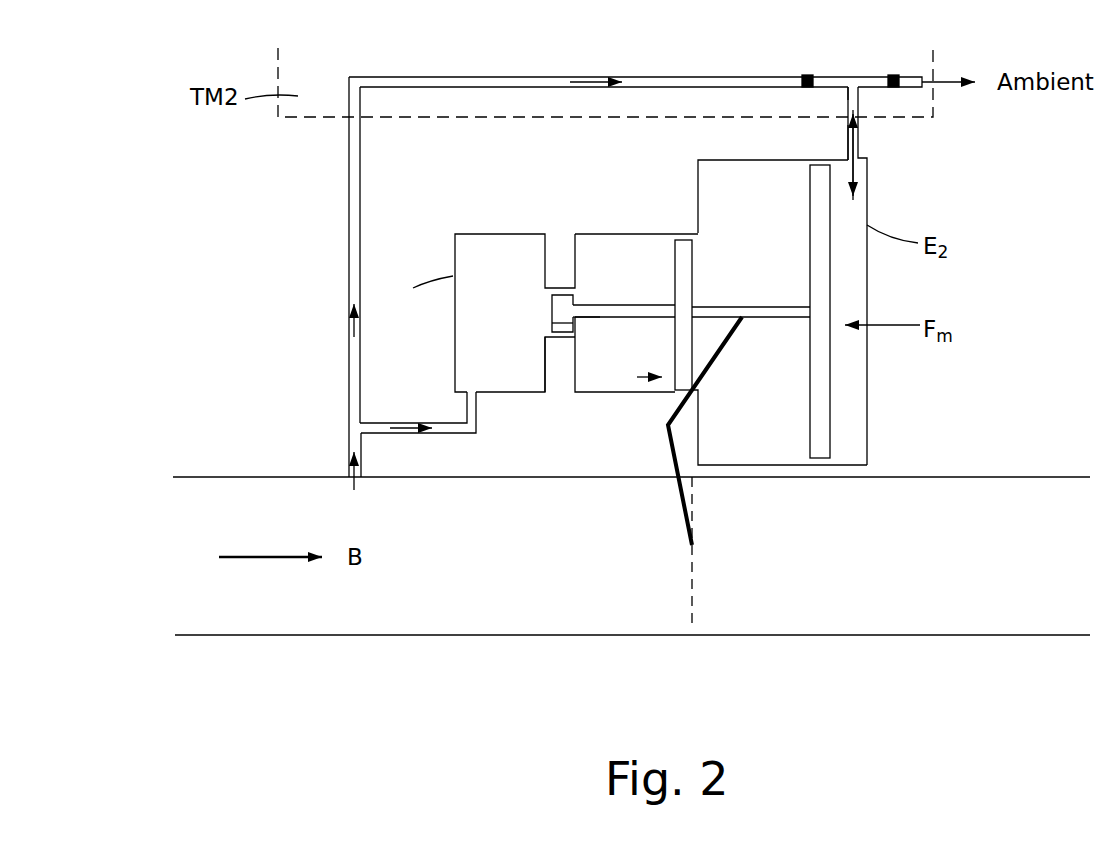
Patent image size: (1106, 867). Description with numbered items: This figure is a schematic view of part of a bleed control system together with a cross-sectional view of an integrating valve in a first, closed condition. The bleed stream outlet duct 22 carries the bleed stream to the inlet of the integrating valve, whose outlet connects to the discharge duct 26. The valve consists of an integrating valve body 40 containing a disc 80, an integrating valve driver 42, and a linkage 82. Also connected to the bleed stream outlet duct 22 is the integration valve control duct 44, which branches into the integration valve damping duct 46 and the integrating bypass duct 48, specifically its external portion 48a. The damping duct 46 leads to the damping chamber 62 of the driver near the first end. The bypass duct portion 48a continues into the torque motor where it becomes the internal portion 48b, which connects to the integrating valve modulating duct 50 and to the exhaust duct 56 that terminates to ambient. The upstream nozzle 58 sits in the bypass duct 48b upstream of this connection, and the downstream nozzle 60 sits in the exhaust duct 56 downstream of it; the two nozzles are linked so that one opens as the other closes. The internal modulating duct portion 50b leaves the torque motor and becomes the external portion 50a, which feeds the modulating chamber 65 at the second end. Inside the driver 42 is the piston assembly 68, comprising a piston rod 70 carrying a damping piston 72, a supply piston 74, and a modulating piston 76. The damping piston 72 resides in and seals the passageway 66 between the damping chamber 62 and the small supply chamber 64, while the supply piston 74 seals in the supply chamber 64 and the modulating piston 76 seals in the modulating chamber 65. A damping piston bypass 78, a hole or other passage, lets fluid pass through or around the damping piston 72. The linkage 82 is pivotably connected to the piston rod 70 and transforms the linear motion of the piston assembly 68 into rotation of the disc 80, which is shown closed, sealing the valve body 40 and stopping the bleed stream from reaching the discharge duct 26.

The bleed stream outlet duct 22 is at (243, 512).
The discharge duct 26 is at (988, 490).
The integrating valve body 40 is at (674, 564).
The integrating valve driver 42 is at (627, 335).
The integration valve control duct 44 is at (346, 455).
The integration valve damping duct 46 is at (467, 430).
The integration valve damping duct (integrating bypass duct) 48 is at (552, 247).
The external portion of integration damping duct 48a is at (347, 245).
The internal portion of integration valve damping duct 48b is at (487, 80).
The integrating valve modulating duct 50 is at (871, 127).
The external portion integrating valve modulating duct 50a is at (847, 138).
The internal portion integrating valve modulating duct 50b is at (845, 92).
The exhaust duct 56 is at (918, 72).
The upstream nozzle 58 is at (805, 74).
The downstream nozzle 60 is at (890, 74).
The damping chamber 62 is at (466, 242).
The supply chamber 64 is at (590, 246).
The modulating chamber 65 is at (710, 172).
The passageway 66 is at (545, 335).
The piston assembly 68 is at (630, 347).
The piston rod 70 is at (758, 313).
The damping piston 72 is at (553, 306).
The supply piston 74 is at (678, 276).
The modulating piston 76 is at (818, 212).
The damping piston bypass 78 is at (573, 323).
The disc 80 is at (693, 557).
The linkage 82 is at (668, 440).